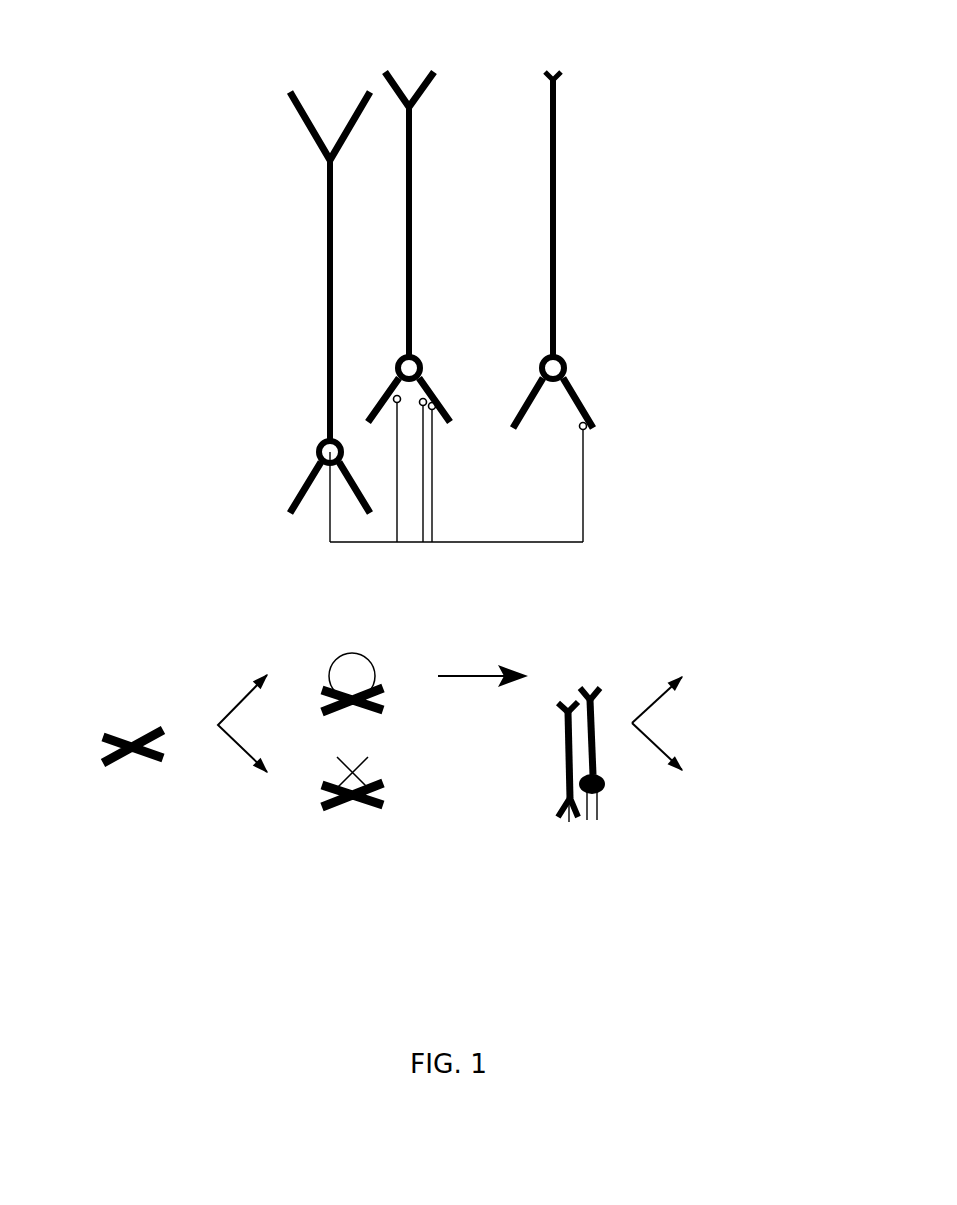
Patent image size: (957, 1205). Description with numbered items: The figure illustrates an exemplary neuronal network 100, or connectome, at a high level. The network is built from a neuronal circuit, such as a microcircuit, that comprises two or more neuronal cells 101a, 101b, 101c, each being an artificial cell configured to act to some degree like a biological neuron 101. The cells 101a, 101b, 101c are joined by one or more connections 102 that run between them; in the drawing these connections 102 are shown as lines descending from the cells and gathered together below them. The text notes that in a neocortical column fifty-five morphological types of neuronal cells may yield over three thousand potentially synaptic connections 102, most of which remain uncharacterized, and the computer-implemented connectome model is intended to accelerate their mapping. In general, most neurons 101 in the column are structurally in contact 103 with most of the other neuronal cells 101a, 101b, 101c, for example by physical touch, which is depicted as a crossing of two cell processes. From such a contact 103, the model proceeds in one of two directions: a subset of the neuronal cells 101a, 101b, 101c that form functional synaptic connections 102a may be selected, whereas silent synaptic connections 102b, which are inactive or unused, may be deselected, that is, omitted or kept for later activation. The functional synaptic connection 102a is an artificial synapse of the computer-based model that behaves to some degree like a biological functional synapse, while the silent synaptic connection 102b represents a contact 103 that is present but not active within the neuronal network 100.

The neuronal network 100 is at (602, 92).
The neuron 101 is at (483, 667).
The neuronal cell 101a is at (322, 302).
The neuronal cell 101b is at (411, 247).
The neuronal cell 101c is at (556, 251).
The connection 102 is at (456, 472).
The functional synaptic connection 102a is at (691, 741).
The silent synaptic connection 102b is at (687, 754).
The contact 103 is at (133, 759).